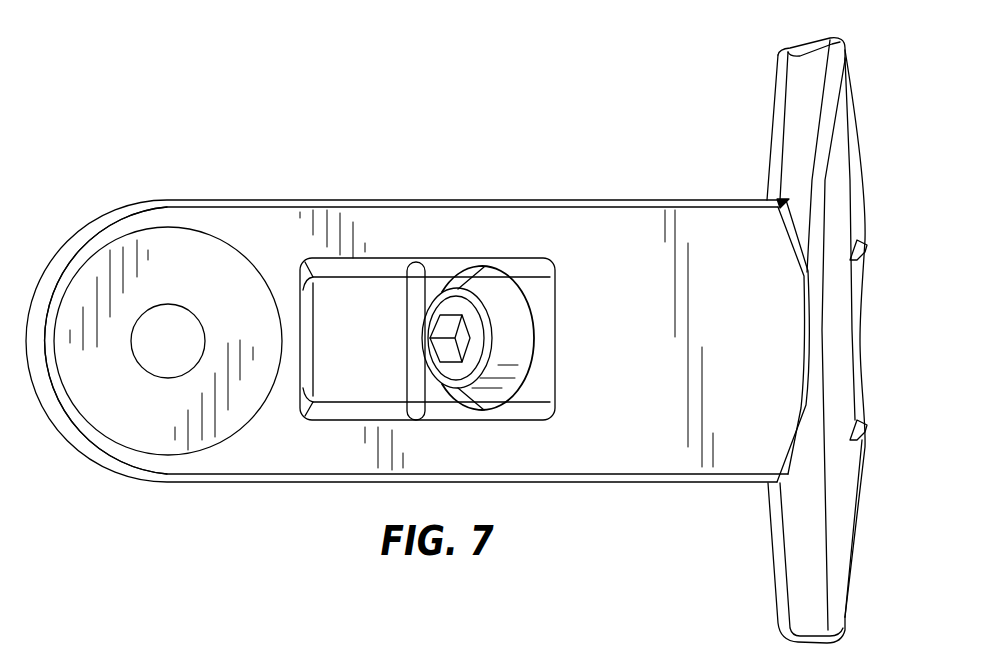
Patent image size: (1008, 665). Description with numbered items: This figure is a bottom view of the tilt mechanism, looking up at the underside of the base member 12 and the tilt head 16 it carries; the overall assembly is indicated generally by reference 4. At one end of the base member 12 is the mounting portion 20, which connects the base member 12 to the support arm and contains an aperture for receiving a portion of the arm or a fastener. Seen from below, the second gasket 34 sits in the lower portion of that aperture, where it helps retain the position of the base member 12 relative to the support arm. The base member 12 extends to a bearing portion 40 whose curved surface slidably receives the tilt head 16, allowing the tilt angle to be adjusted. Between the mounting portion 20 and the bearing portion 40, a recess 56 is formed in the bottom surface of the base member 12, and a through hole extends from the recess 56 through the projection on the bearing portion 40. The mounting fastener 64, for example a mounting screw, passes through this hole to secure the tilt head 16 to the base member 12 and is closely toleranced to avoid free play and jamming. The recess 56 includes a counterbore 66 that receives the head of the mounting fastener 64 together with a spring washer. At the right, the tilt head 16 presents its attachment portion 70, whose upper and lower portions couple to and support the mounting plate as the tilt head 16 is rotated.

The mounting assembly 4 is at (116, 521).
The base member 12 is at (163, 0).
The tilt head 16 is at (771, 43).
The mounting portion 20 is at (95, 246).
The second gasket 34 is at (117, 402).
The bearing portion 40 is at (612, 225).
The recess 56 is at (363, 311).
The mounting fastener 64 is at (513, 337).
The counterbore 66 is at (500, 272).
The attachment portion 70 is at (832, 202).